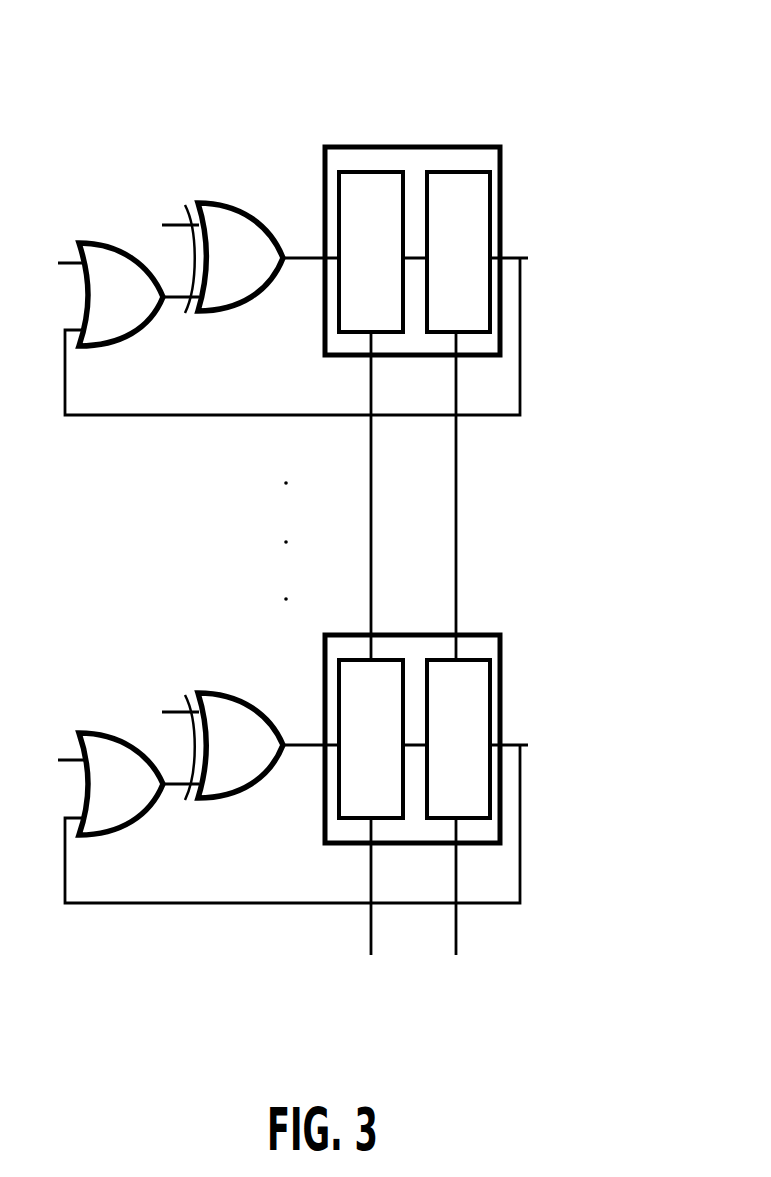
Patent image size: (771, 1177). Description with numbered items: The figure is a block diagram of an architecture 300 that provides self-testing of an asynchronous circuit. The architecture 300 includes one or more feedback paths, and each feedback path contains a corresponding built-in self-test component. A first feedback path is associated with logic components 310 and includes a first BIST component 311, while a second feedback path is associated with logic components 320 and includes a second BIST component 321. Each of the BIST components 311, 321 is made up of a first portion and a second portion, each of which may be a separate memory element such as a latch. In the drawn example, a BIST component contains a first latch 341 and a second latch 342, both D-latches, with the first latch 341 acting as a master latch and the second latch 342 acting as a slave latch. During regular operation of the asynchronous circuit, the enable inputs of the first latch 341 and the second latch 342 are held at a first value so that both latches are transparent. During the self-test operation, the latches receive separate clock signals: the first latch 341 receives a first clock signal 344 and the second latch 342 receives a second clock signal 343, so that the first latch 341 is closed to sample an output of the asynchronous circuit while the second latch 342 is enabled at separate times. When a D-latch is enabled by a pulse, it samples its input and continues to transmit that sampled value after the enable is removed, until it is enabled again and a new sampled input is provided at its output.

The architecture 300 is at (590, 86).
The logic components 310 is at (88, 243).
The first BIST component 311 is at (418, 147).
The first latch 341 is at (385, 265).
The second latch 342 is at (471, 265).
The second clock signal 343 is at (456, 390).
The first clock signal 344 is at (371, 390).
The logic components 320 is at (191, 717).
The second BIST component 321 is at (427, 689).